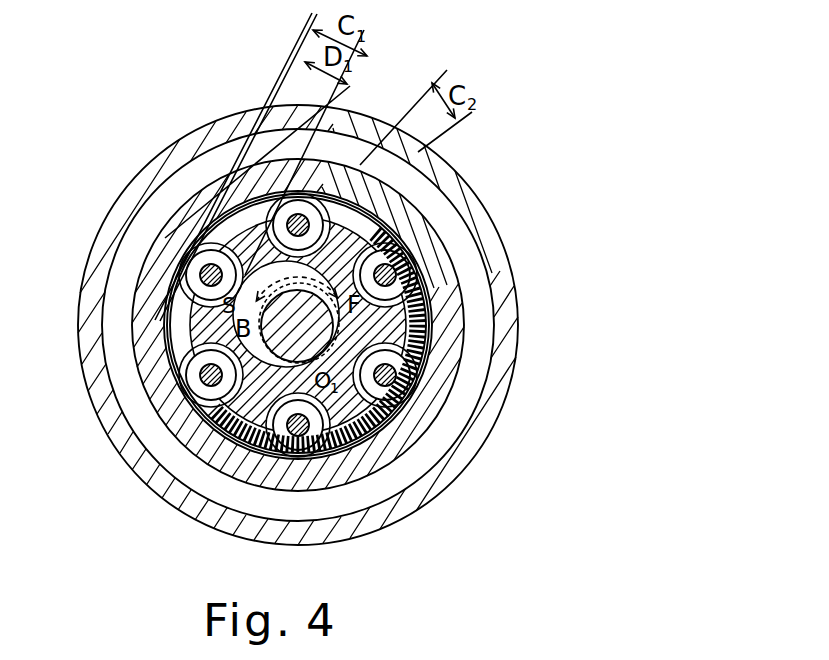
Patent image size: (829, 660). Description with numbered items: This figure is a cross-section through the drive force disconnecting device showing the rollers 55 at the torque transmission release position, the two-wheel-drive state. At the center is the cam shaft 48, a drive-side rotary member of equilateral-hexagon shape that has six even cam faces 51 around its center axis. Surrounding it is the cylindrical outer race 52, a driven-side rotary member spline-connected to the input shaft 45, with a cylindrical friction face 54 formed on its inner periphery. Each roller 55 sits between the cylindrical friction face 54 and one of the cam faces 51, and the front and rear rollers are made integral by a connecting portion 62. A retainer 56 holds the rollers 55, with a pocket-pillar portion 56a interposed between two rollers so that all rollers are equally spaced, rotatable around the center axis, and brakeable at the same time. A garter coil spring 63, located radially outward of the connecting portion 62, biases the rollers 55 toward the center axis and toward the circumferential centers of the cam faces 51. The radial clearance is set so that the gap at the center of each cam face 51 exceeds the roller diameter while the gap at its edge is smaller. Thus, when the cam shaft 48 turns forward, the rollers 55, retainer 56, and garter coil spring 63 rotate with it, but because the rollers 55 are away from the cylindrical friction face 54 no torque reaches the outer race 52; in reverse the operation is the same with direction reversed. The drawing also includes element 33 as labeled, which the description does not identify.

The housing 33 is at (447, 175).
The input shaft 45 is at (225, 200).
The cam shaft 48 is at (162, 493).
The cam faces 51 is at (235, 330).
The outer race 52 is at (447, 275).
The cylindrical friction face 54 is at (190, 355).
The rollers 55 is at (288, 320).
The retainer 56 is at (298, 325).
The pocket-pillar portion 56a is at (223, 361).
The connecting portion 62 is at (183, 258).
The garter coil spring 63 is at (335, 425).